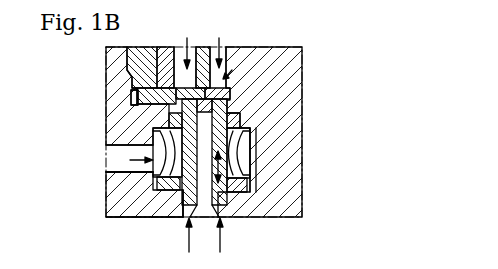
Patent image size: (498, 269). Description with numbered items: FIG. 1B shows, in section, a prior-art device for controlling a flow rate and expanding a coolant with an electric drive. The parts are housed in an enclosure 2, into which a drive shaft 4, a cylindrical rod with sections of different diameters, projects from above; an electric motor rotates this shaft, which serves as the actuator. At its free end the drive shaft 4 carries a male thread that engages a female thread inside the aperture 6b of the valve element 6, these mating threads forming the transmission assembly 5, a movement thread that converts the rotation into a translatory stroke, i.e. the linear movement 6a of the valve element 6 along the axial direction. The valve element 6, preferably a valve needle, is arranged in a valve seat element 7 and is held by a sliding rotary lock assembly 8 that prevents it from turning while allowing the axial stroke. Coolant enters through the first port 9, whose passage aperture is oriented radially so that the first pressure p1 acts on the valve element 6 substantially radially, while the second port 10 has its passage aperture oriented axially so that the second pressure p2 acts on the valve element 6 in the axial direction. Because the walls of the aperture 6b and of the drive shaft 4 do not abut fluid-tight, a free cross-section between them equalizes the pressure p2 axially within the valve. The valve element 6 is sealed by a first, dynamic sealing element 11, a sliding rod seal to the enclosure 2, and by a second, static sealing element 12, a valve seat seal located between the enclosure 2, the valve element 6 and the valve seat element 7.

The enclosure 2 is at (128, 77).
The drive shaft 4 is at (133, 100).
The transmission assembly 5 is at (134, 97).
The valve element 6 is at (108, 205).
The linear movement 6a is at (280, 158).
The aperture 6b is at (280, 136).
The valve seat element 7 is at (280, 173).
The sliding rotary lock assembly 8 is at (293, 65).
The first port 9 is at (118, 174).
The second port 10 is at (183, 207).
The first, dynamic sealing element 11 is at (280, 110).
The second, static sealing element 12 is at (280, 192).
The first pressure p1 is at (135, 158).
The second pressure p2 is at (185, 41).